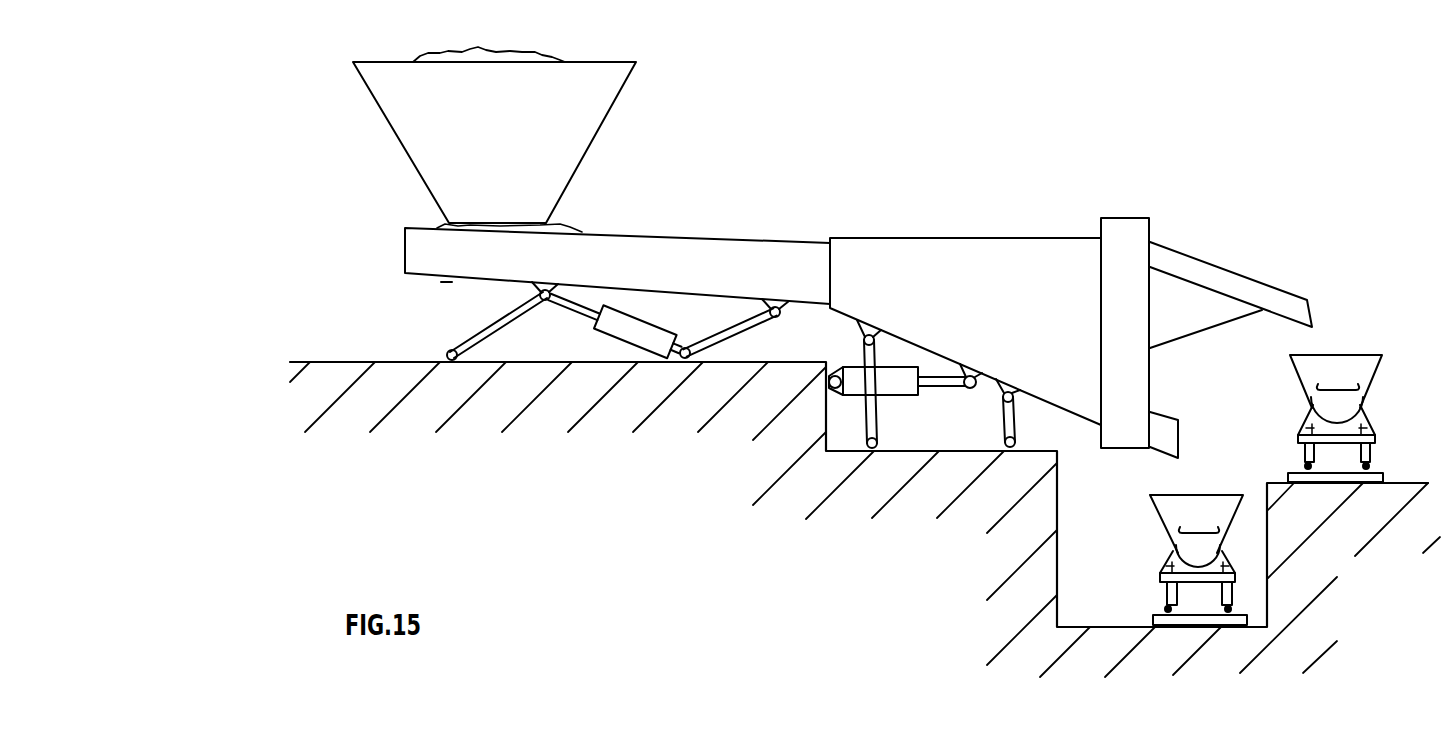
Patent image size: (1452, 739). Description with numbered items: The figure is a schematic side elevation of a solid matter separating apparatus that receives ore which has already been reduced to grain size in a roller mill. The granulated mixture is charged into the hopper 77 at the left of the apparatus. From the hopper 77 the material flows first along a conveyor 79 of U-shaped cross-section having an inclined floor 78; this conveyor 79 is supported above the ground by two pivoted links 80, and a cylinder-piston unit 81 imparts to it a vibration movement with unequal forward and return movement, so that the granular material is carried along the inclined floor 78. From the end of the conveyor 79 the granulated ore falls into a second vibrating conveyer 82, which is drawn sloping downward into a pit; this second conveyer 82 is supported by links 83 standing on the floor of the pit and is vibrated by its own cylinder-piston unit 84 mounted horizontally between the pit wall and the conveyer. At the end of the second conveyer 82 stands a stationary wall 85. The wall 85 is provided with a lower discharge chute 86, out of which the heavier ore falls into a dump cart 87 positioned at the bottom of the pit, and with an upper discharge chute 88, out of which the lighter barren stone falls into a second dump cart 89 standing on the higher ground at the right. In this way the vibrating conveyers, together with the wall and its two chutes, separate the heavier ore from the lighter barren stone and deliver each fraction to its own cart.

The hopper 77 is at (538, 160).
The inclined floor 78 is at (536, 289).
The conveyor 79 is at (718, 263).
The pivoted links 80 is at (503, 322).
The cylinder-piston unit 81 is at (627, 327).
The second vibrating conveyer 82 is at (917, 282).
The links 83 is at (872, 415).
The cylinder-piston unit 84 is at (905, 383).
The stationary wall 85 is at (1118, 252).
The lower discharge chute 86 is at (1165, 435).
The dump cart 87 is at (1180, 513).
The upper discharge chute 88 is at (1192, 268).
The dump cart 89 is at (1317, 375).